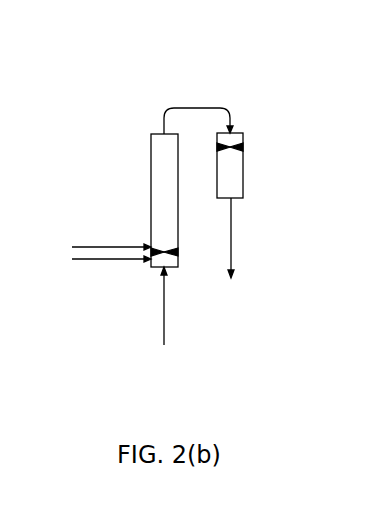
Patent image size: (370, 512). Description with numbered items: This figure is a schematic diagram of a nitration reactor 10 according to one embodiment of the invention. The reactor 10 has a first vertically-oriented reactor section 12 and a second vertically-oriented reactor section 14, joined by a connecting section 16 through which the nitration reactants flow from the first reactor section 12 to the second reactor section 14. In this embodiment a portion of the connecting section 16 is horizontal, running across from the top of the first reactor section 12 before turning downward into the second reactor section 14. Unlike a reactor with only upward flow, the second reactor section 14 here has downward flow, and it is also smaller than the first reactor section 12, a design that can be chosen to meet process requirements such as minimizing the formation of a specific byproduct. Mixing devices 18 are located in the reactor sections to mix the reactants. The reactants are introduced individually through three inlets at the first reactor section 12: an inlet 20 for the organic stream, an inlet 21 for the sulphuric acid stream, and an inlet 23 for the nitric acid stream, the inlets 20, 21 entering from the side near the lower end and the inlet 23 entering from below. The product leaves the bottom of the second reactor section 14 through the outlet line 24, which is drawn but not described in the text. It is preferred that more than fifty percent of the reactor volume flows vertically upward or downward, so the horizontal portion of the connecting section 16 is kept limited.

The nitration reactor 10 is at (118, 120).
The first vertically-oriented reactor section 12 is at (154, 163).
The second vertically-oriented reactor section 14 is at (235, 165).
The connecting section 16 is at (193, 106).
The mixing device 18 is at (237, 143).
The inlet for the organic stream 20 is at (112, 262).
The inlet for the sulphuric acid stream 21 is at (115, 245).
The inlet for the nitric acid stream 23 is at (162, 307).
The product outlet line 24 is at (233, 238).